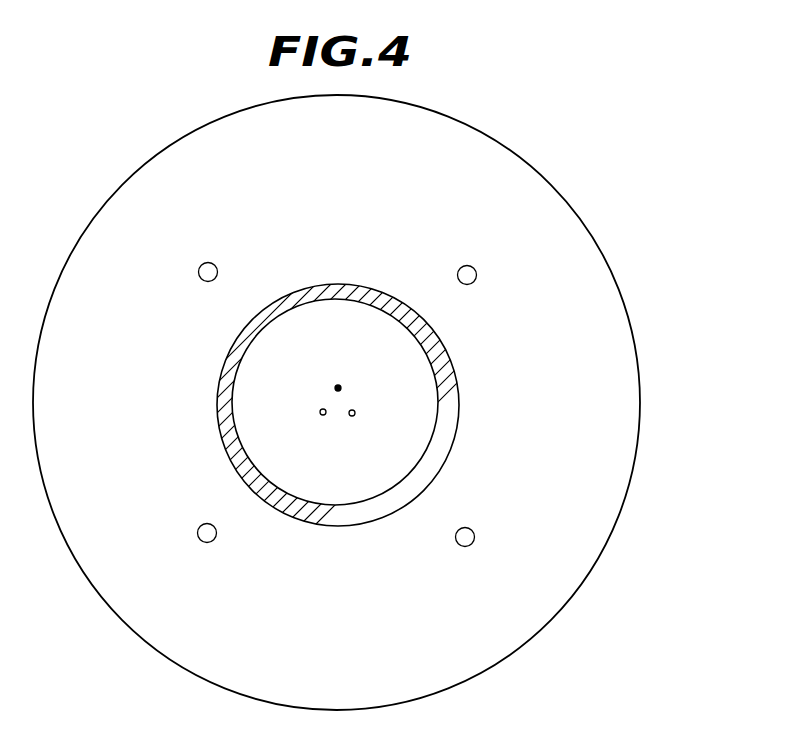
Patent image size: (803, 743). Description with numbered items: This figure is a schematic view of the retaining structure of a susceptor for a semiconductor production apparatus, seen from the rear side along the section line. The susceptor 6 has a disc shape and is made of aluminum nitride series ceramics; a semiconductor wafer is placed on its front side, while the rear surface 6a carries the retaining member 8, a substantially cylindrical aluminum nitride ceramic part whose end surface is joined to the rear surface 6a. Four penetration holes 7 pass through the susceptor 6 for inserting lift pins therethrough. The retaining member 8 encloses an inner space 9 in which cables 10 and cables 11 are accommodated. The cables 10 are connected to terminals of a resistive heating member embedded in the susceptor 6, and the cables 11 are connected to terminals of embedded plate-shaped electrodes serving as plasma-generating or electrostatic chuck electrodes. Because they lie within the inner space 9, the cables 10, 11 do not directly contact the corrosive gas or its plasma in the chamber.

The susceptor 6 is at (560, 185).
The rear surface 6a is at (577, 273).
The penetration hole 7 is at (477, 274).
The retaining member 8 is at (440, 370).
The inner space 9 is at (365, 483).
The cables 10 is at (320, 414).
The cables 11 is at (341, 387).